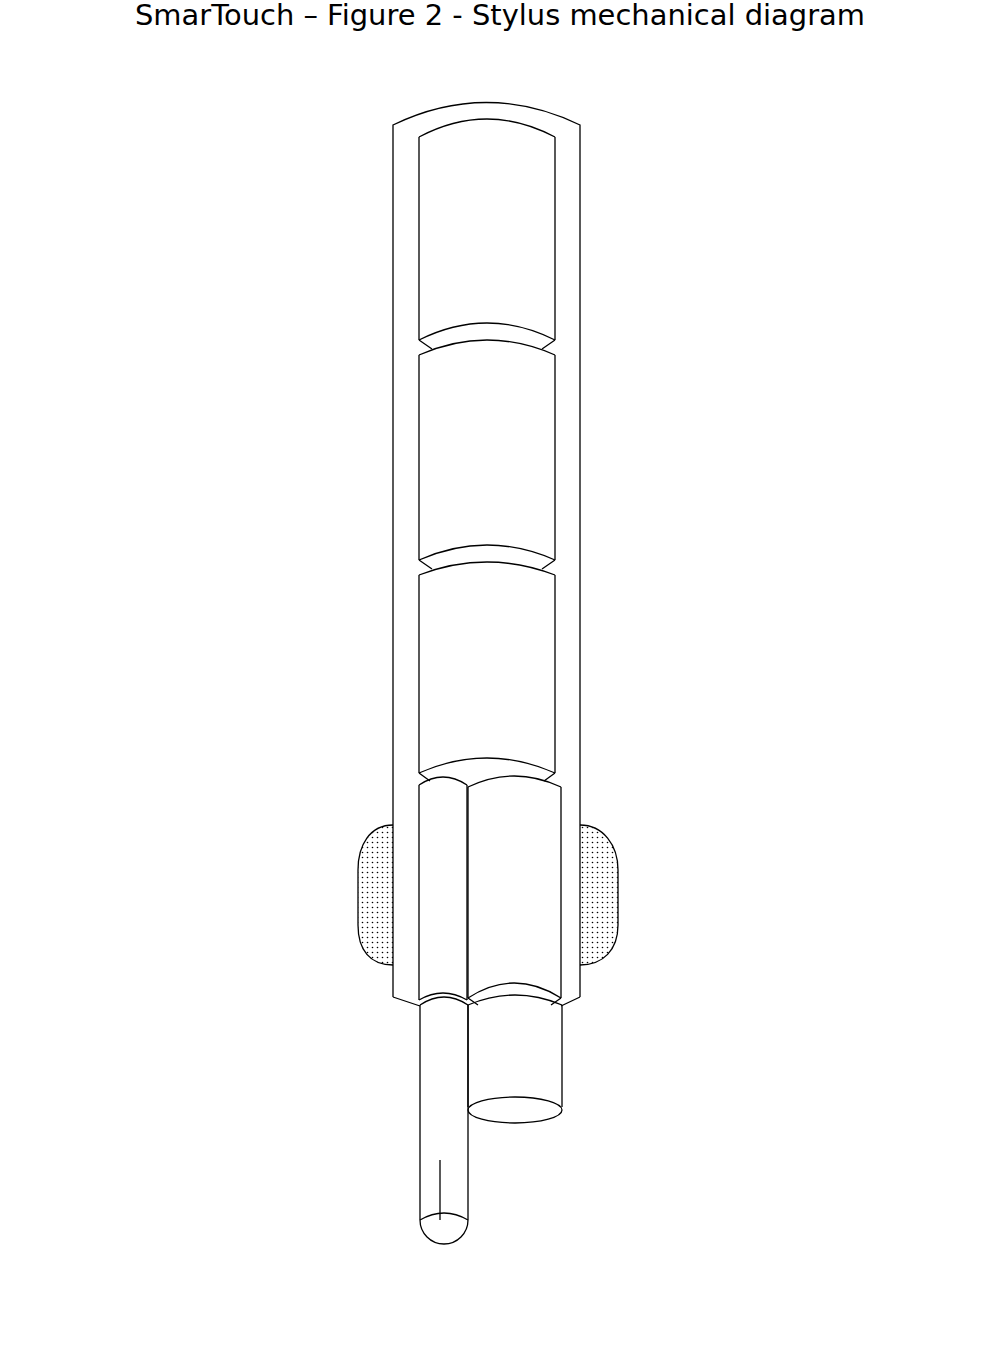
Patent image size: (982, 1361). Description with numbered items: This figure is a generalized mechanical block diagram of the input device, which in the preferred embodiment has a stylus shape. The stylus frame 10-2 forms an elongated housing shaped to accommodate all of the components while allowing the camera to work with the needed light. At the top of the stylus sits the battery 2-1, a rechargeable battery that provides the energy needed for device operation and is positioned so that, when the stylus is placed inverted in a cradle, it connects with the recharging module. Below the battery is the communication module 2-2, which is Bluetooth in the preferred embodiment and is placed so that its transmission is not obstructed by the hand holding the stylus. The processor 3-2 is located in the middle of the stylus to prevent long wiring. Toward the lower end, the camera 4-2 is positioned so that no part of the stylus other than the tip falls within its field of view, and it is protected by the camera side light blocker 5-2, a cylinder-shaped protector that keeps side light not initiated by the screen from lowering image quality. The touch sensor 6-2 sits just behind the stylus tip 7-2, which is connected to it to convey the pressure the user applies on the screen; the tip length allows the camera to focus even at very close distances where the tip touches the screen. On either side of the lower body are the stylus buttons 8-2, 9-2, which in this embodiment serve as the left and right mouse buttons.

The stylus frame 10-2 is at (393, 341).
The battery 2-1 is at (528, 208).
The communication module 2-2 is at (528, 428).
The processor 3-2 is at (530, 657).
The camera 4-2 is at (522, 858).
The camera side light blocker 5-2 is at (562, 1053).
The touch sensor 6-2 is at (447, 805).
The stylus tip 7-2 is at (447, 1042).
The stylus button 8-2 is at (365, 895).
The stylus button 9-2 is at (618, 893).